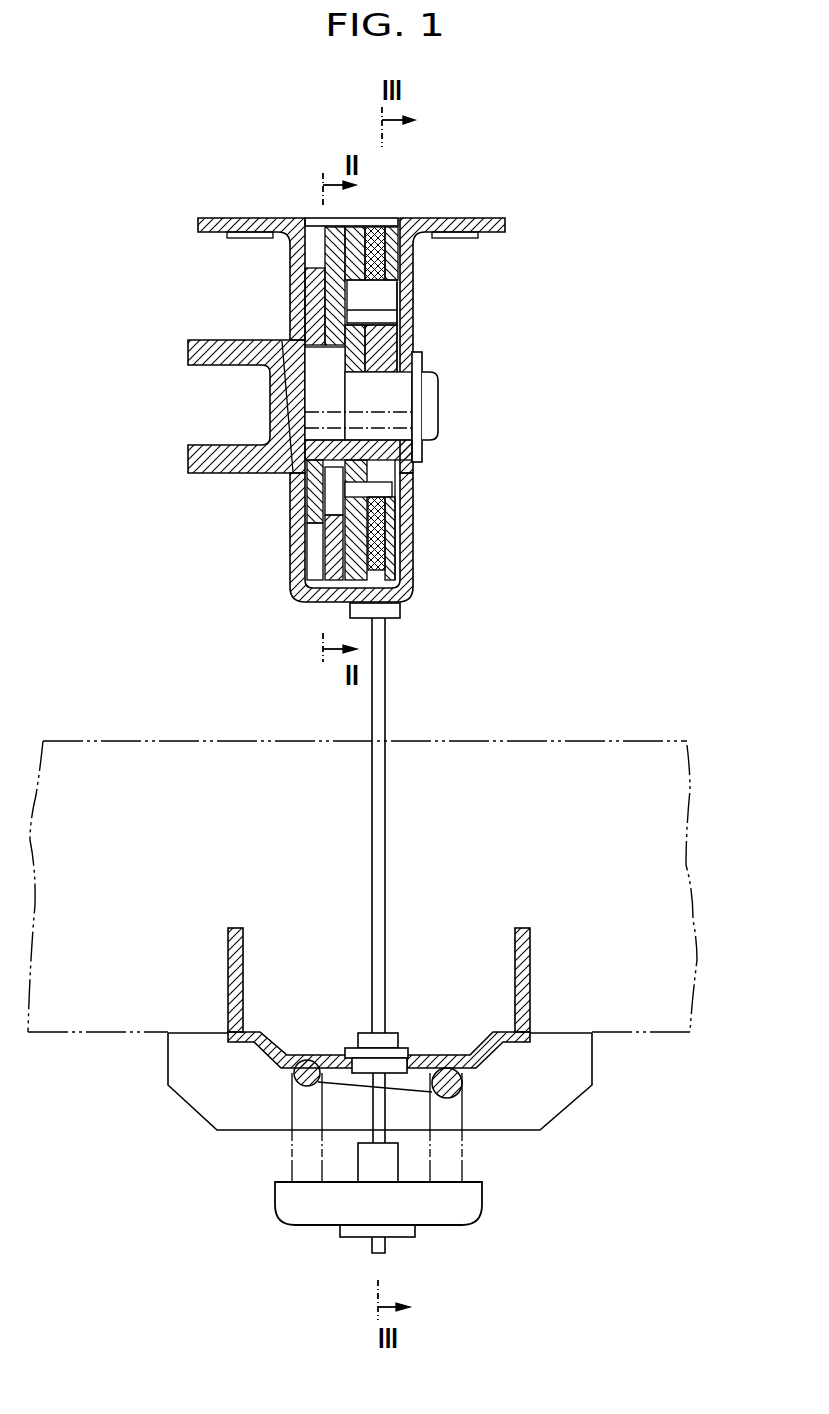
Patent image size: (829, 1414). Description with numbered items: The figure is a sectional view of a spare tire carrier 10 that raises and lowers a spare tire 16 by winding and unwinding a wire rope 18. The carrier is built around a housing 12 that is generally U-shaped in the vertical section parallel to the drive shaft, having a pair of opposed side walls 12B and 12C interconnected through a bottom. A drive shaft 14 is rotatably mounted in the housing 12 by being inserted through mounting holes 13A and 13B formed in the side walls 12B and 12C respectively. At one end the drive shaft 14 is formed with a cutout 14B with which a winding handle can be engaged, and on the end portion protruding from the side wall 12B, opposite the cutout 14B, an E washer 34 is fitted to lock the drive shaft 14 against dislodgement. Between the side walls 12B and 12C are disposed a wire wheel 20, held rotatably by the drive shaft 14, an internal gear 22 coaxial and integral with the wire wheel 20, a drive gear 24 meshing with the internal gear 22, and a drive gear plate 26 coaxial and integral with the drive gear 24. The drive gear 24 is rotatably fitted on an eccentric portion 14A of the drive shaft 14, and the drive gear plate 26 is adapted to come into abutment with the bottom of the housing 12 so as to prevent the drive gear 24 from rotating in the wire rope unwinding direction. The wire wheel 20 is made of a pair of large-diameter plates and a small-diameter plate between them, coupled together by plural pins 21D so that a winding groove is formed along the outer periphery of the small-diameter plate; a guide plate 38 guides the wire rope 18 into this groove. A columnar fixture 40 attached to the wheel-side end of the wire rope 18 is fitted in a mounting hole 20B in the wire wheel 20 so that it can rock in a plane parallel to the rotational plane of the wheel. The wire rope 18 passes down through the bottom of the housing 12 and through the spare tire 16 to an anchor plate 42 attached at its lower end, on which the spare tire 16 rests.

The spare tire carrier 10 is at (450, 192).
The housing 12 is at (410, 582).
The side wall 12B is at (410, 305).
The side wall 12C is at (286, 484).
The mounting hole 13A is at (415, 380).
The mounting hole 13B is at (288, 468).
The drive shaft 14 is at (428, 432).
The eccentric portion 14A is at (315, 360).
The cutout 14B is at (196, 383).
The spare tire 16 is at (80, 1023).
The wire rope 18 is at (380, 693).
The wire wheel 20 is at (332, 602).
The mounting hole 20B is at (373, 230).
The pins 21D is at (393, 492).
The internal gear 22 is at (353, 573).
The drive gear 24 is at (312, 505).
The drive gear plate 26 is at (312, 294).
The E washer 34 is at (425, 357).
The guide plate 38 is at (318, 217).
The columnar fixture 40 is at (390, 297).
The anchor plate 42 is at (230, 1120).